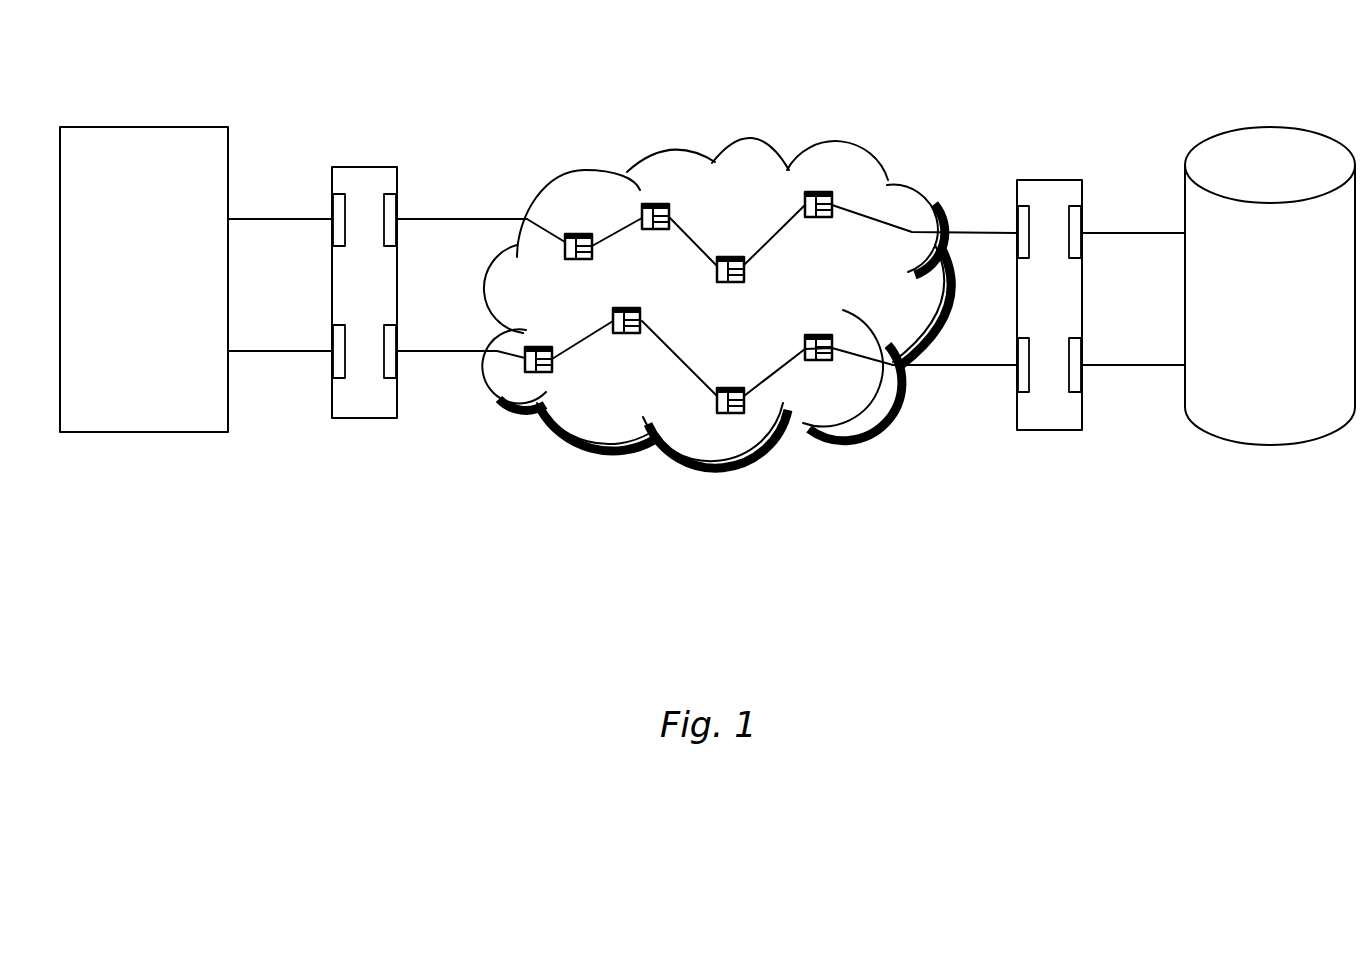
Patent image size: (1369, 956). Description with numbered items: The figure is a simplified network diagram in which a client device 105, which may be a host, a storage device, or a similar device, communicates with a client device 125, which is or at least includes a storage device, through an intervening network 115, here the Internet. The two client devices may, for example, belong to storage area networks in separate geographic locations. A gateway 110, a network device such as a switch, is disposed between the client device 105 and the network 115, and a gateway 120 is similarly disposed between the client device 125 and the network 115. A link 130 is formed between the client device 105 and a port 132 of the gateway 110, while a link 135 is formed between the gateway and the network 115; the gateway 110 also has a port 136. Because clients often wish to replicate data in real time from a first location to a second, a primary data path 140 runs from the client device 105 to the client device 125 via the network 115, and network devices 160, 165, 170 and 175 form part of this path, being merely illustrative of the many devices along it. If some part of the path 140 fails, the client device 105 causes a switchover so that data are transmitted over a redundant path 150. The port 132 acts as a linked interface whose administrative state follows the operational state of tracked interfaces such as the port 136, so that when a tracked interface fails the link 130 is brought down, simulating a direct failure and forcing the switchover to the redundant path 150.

The client device 105 is at (190, 140).
The gateway 110 is at (357, 178).
The network 115 is at (608, 414).
The gateway 120 is at (1055, 178).
The client device 125 is at (1275, 153).
The link 130 is at (269, 218).
The port 132 is at (339, 205).
The link 135 is at (442, 218).
The port 136 is at (388, 220).
The path 140 is at (878, 205).
The redundant path 150 is at (791, 388).
The network device 160 is at (572, 235).
The network device 165 is at (654, 204).
The network device 170 is at (728, 258).
The network device 175 is at (822, 193).